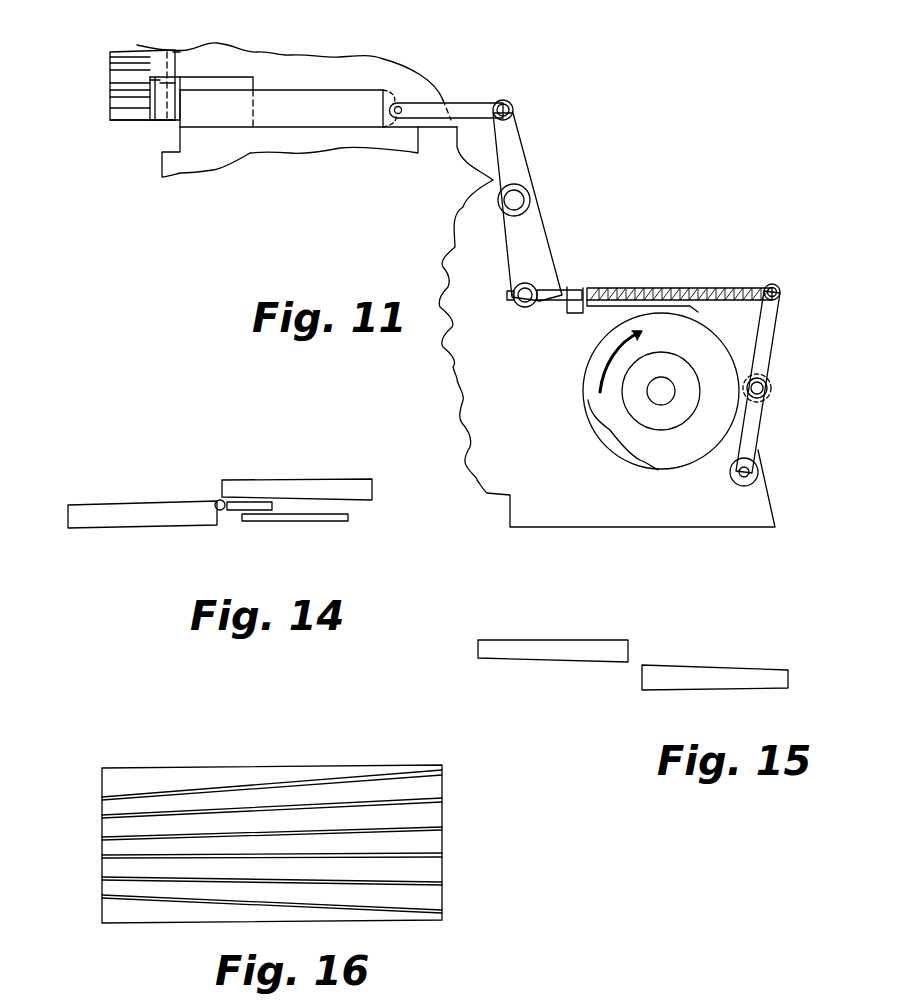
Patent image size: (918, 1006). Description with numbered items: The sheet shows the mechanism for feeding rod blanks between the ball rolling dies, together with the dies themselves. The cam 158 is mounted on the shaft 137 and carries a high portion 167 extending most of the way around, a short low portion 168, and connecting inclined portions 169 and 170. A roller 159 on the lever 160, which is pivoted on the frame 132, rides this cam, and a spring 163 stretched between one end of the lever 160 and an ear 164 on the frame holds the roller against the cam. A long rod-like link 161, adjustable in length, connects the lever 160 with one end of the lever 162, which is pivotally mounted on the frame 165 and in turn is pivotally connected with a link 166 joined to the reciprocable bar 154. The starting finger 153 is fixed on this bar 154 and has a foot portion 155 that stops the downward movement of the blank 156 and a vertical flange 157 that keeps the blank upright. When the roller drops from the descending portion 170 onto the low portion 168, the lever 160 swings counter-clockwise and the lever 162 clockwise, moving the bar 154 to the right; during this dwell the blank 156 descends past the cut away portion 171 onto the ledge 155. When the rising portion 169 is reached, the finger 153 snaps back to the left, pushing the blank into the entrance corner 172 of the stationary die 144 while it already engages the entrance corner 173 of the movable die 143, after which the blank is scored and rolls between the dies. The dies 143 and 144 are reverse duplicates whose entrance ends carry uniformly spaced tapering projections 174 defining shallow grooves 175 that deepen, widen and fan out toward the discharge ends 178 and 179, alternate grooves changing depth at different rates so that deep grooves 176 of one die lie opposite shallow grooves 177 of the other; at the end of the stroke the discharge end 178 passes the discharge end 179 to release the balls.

In FIG. 11, the frame 132 is at (583, 513).
In FIG. 11, the shaft 137 is at (660, 396).
In FIG. 11, the movable die 143 is at (130, 125).
In FIG. 14, the movable die 143 is at (347, 485).
In FIG. 15, the movable die 143 is at (528, 648).
In FIG. 14, the stationary die 144 is at (133, 520).
In FIG. 15, the stationary die 144 is at (758, 682).
In FIG. 16, the stationary die 144 is at (168, 773).
In FIG. 11, the starting finger 153 is at (237, 82).
In FIG. 14, the starting finger 153 is at (257, 505).
In FIG. 11, the reciprocable bar 154 is at (288, 117).
In FIG. 14, the reciprocable bar 154 is at (323, 518).
In FIG. 11, the foot portion 155 is at (153, 128).
In FIG. 14, the foot portion 155 is at (232, 500).
In FIG. 14, the blank 156 is at (215, 500).
In FIG. 11, the vertical flange 157 is at (152, 88).
In FIG. 14, the vertical flange 157 is at (227, 513).
In FIG. 11, the cam 158 is at (697, 333).
In FIG. 11, the roller 159 is at (771, 397).
In FIG. 11, the lever 160 is at (766, 354).
In FIG. 11, the rod-like link 161 is at (556, 297).
In FIG. 11, the lever 162 is at (523, 236).
In FIG. 11, the spring 163 is at (665, 290).
In FIG. 11, the ear 164 is at (580, 290).
In FIG. 11, the frame 165 is at (531, 198).
In FIG. 11, the link 166 is at (462, 108).
In FIG. 11, the high portion 167 is at (588, 353).
In FIG. 11, the low portion 168 is at (600, 430).
In FIG. 11, the rising inclined portion 169 is at (643, 470).
In FIG. 11, the descending inclined portion 170 is at (590, 412).
In FIG. 11, the cut away portion 171 is at (168, 83).
In FIG. 14, the cut away portion 171 is at (230, 505).
In FIG. 14, the entrance corner 172 is at (213, 515).
In FIG. 15, the entrance corner 172 is at (788, 667).
In FIG. 16, the entrance corner 172 is at (102, 787).
In FIG. 14, the entrance corner 173 is at (218, 498).
In FIG. 15, the entrance corner 173 is at (478, 662).
In FIG. 11, the tapering projections 174 is at (130, 70).
In FIG. 16, the tapering projections 174 is at (102, 837).
In FIG. 16, the grooves 175 is at (132, 803).
In FIG. 11, the deep grooves 176 is at (132, 62).
In FIG. 16, the deep grooves 176 is at (430, 818).
In FIG. 11, the shallow grooves 177 is at (130, 80).
In FIG. 16, the shallow grooves 177 is at (443, 773).
In FIG. 11, the discharge end 178 is at (175, 53).
In FIG. 15, the discharge end 178 is at (630, 645).
In FIG. 15, the discharge end 179 is at (642, 678).